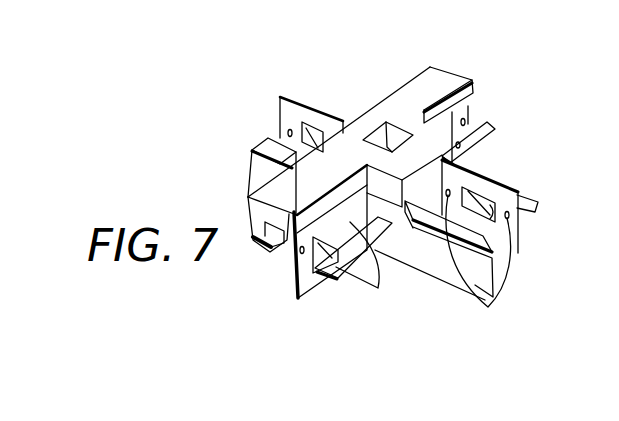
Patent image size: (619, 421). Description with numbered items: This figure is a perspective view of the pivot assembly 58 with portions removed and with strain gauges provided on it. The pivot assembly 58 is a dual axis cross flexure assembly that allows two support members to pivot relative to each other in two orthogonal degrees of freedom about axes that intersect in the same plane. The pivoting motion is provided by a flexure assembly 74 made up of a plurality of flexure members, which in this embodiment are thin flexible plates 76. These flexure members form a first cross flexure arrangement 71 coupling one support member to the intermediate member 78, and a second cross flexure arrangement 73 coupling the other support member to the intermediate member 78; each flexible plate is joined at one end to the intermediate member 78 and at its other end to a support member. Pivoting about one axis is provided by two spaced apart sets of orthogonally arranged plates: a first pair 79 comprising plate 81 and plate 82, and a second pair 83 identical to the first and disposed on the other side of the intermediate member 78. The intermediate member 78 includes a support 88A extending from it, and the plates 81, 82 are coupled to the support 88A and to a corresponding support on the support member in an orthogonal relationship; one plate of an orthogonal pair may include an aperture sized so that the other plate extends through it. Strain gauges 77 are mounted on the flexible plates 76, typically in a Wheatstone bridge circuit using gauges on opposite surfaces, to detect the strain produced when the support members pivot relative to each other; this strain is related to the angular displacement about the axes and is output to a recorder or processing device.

The pivot assembly 58 is at (221, 159).
The first cross flexure arrangement 71 is at (536, 234).
The second cross flexure arrangement 73 is at (295, 70).
The flexure assembly 74 is at (491, 62).
The thin flexible plates 76 is at (510, 122).
The strain gauges 77 is at (290, 133).
The intermediate member 78 is at (392, 110).
The first pair 79 is at (514, 93).
The plate 81 is at (477, 147).
The plate 82 is at (466, 122).
The second pair 83 is at (275, 272).
The support 88A is at (413, 82).